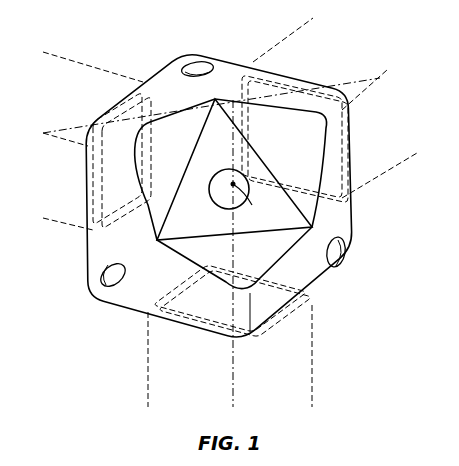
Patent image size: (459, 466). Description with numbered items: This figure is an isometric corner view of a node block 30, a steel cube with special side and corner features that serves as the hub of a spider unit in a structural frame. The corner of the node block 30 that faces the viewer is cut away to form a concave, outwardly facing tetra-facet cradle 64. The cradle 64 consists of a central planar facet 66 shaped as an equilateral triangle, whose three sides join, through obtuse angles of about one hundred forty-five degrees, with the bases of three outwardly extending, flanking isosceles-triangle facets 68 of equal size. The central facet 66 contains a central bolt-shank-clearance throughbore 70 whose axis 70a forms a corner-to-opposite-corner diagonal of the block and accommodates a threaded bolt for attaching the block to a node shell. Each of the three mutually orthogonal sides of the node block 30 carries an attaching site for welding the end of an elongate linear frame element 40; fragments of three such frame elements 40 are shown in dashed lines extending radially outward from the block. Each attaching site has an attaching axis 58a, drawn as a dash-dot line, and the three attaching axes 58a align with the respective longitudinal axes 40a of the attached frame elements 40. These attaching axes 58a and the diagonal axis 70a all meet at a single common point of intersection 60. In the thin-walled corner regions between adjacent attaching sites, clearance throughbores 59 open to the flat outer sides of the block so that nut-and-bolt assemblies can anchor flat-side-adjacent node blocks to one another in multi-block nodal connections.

The node block 30 is at (325, 63).
The linear frame element 40 is at (84, 58).
The longitudinal axis of frame element 40a is at (370, 118).
The attaching axis 58a is at (261, 206).
The clearance throughbore 59 is at (188, 64).
The common point of intersection 60 is at (243, 188).
The tetra-facet cradle 64 is at (184, 147).
The central planar facet 66 is at (205, 157).
The isosceles-triangle facet 68 is at (272, 128).
The bolt-shank-clearance throughbore 70 is at (233, 174).
The throughbore axis 70a is at (233, 184).